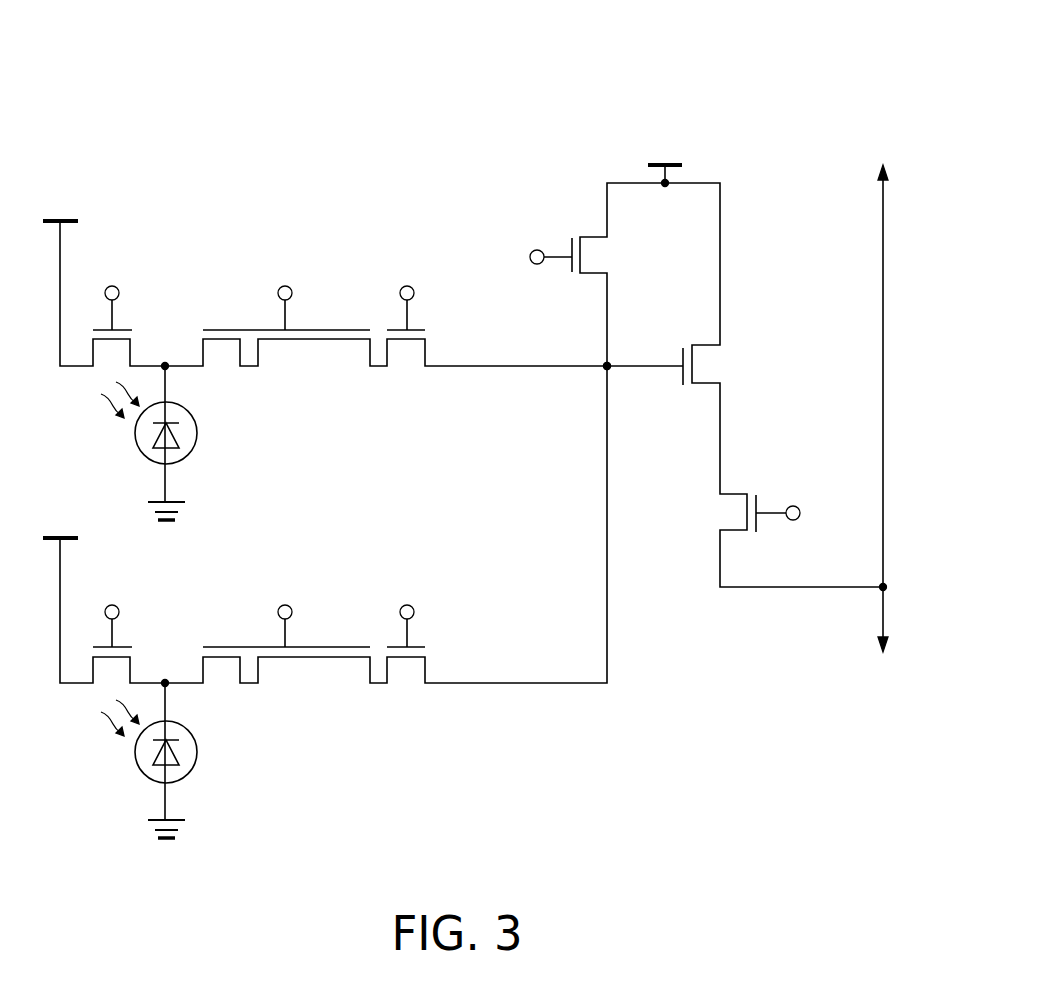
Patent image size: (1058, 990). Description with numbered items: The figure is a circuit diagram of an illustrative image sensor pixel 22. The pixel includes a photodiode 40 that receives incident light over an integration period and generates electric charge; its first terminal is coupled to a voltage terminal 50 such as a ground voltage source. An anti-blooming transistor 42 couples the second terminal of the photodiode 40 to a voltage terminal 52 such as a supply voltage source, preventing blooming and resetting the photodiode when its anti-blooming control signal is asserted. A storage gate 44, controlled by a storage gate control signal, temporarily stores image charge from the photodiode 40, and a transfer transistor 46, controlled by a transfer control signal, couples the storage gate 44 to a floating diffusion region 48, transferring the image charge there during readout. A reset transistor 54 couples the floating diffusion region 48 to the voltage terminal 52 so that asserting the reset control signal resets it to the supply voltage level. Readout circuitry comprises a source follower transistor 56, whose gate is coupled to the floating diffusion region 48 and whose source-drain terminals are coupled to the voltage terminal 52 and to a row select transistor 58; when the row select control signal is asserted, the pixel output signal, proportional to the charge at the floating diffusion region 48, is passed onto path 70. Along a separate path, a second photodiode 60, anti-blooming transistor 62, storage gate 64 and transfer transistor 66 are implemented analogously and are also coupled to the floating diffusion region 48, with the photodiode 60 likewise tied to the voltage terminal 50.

The image sensor pixel 22 is at (953, 53).
The photodiode 40 is at (166, 442).
The anti-blooming transistor 42 is at (131, 339).
The storage gate 44 is at (322, 330).
The transfer transistor 46 is at (428, 339).
The floating diffusion region 48 is at (604, 370).
The voltage terminal 50 is at (147, 502).
The voltage terminal 52 is at (61, 219).
The reset transistor 54 is at (580, 276).
The source follower transistor 56 is at (692, 386).
The row select transistor 58 is at (748, 492).
The photodiode 60 is at (166, 760).
The anti-blooming transistor 62 is at (131, 657).
The storage gate 64 is at (322, 647).
The transfer transistor 66 is at (428, 657).
The path 70 is at (886, 455).